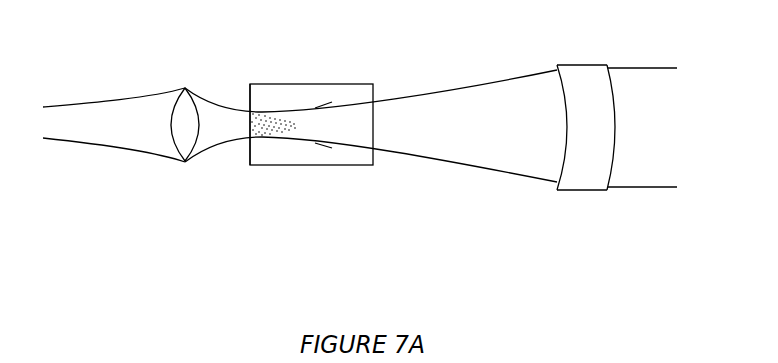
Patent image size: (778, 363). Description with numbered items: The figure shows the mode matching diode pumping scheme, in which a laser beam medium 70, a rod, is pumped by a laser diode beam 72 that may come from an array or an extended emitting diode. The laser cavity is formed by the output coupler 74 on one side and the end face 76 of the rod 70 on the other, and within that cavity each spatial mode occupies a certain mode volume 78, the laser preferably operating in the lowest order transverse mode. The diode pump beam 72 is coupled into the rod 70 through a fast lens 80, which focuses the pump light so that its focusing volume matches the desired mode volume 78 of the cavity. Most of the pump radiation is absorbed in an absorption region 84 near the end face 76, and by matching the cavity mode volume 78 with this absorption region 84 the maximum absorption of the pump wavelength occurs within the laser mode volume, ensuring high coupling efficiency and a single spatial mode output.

The laser beam medium 70 is at (362, 168).
The laser diode beam 72 is at (157, 155).
The output coupler 74 is at (582, 192).
The end face 76 is at (248, 98).
The mode volume 78 is at (388, 100).
The fast lens 80 is at (185, 88).
The absorption region 84 is at (287, 130).